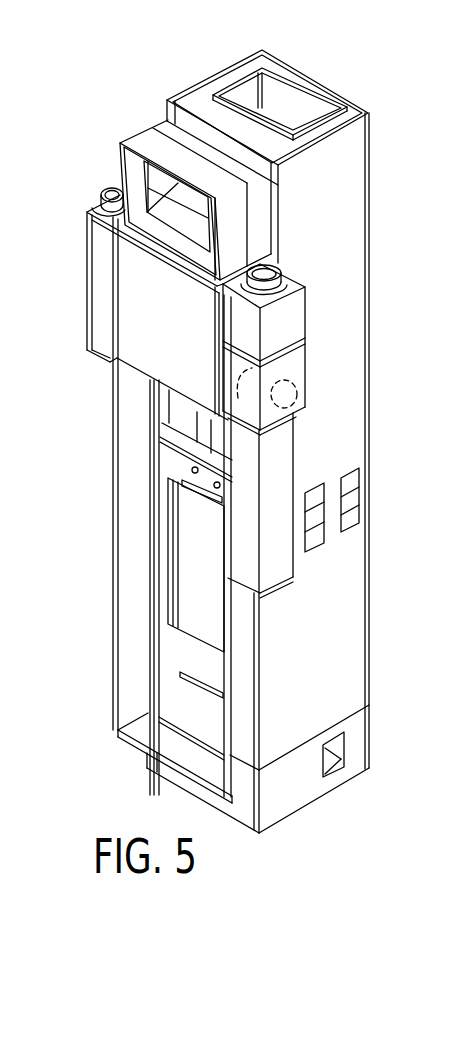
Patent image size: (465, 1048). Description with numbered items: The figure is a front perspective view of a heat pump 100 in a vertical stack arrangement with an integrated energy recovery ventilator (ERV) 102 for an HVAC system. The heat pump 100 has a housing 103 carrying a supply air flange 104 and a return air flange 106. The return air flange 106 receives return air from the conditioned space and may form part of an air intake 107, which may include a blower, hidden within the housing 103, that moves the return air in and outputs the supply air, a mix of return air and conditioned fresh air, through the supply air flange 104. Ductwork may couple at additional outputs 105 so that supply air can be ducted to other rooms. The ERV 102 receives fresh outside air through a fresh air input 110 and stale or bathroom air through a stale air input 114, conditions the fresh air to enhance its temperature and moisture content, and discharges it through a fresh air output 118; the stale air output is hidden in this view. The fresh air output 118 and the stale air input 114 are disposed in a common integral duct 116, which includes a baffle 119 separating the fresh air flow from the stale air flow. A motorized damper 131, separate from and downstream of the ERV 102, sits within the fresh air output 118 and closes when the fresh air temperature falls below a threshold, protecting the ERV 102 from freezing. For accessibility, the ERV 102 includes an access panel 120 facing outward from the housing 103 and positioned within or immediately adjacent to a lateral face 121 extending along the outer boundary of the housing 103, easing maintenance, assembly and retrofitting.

The heat pump 100 is at (330, 55).
The energy recovery ventilator (ERV) 102 is at (135, 292).
The housing 103 is at (343, 428).
The supply air flange 104 is at (152, 133).
The additional outputs 105 is at (271, 85).
The return air flange 106 is at (112, 475).
The air intake 107 is at (195, 551).
The fresh air input 110 is at (100, 243).
The stale air input 114 is at (290, 305).
The integral duct 116 is at (325, 268).
The fresh air output 118 is at (290, 366).
The baffle 119 is at (298, 362).
The access panel 120 is at (143, 350).
The lateral face 121 is at (180, 705).
The damper 131 is at (293, 410).